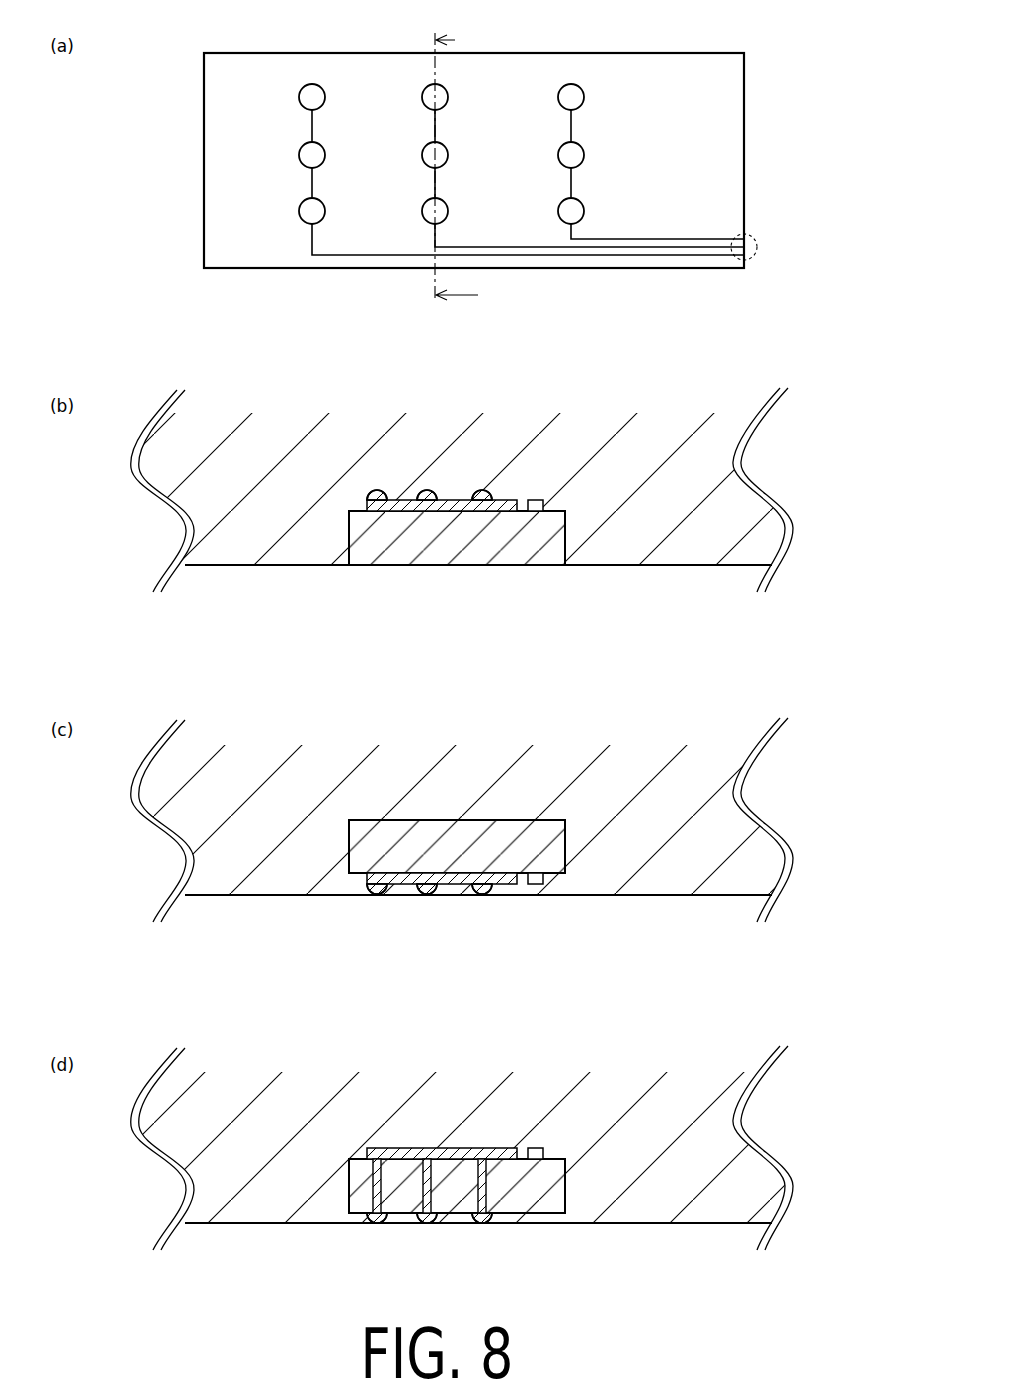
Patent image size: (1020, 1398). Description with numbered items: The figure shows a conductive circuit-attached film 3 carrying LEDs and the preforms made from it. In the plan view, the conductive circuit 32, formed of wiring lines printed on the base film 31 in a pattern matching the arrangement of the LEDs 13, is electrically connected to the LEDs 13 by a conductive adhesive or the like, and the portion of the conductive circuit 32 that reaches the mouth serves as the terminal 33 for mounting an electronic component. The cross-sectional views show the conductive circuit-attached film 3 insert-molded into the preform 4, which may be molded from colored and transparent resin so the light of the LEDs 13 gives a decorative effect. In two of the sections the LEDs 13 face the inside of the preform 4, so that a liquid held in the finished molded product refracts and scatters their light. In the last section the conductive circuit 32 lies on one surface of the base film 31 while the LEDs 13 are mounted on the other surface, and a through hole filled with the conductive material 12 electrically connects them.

The conductive circuit-attached film 3 is at (177, 82).
The base film 31 is at (738, 69).
The conductive circuit 32 is at (291, 187).
The LED 13 is at (571, 85).
The terminal 33 is at (767, 242).
The preform 4 is at (669, 565).
The conductive material 12 is at (487, 1197).